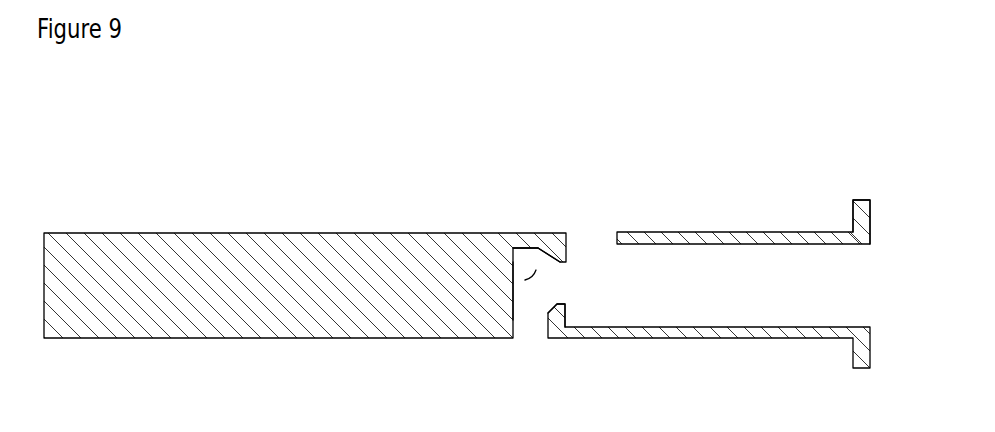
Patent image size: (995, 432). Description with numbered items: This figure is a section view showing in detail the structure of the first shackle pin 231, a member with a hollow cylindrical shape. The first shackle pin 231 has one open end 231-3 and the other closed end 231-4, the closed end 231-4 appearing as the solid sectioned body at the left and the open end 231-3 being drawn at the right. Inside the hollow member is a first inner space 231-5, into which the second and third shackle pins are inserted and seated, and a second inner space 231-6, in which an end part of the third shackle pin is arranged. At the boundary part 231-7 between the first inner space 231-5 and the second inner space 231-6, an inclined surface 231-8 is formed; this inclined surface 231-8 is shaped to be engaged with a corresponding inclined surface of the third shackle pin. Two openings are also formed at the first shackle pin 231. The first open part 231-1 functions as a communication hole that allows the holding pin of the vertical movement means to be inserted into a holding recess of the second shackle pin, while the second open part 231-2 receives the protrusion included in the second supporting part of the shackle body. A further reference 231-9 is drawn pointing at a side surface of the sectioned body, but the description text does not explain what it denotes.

The first shackle pin 231 is at (707, 244).
The first open part 231-1 is at (597, 238).
The second open part 231-2 is at (525, 323).
The open end 231-3 is at (853, 213).
The closed end 231-4 is at (102, 233).
The first inner space 231-5 is at (690, 292).
The second inner space 231-6 is at (513, 249).
The boundary part 231-7 is at (567, 258).
The inclined surface 231-8 is at (532, 268).
The side surface 231-9 is at (513, 288).